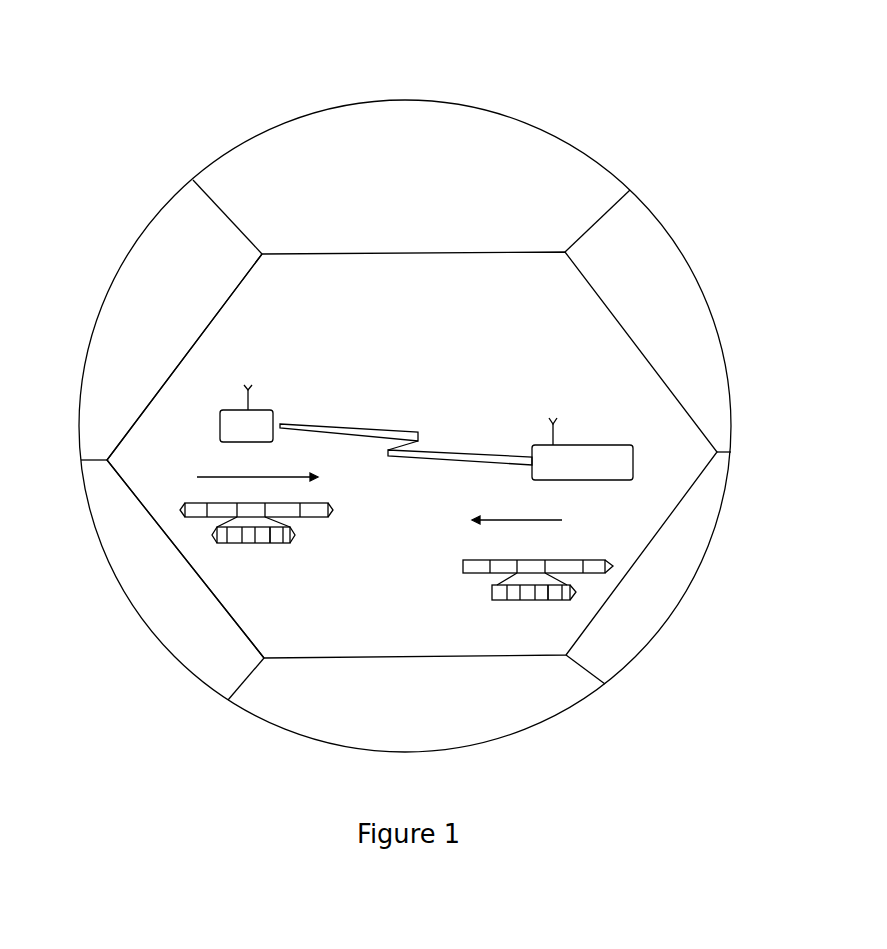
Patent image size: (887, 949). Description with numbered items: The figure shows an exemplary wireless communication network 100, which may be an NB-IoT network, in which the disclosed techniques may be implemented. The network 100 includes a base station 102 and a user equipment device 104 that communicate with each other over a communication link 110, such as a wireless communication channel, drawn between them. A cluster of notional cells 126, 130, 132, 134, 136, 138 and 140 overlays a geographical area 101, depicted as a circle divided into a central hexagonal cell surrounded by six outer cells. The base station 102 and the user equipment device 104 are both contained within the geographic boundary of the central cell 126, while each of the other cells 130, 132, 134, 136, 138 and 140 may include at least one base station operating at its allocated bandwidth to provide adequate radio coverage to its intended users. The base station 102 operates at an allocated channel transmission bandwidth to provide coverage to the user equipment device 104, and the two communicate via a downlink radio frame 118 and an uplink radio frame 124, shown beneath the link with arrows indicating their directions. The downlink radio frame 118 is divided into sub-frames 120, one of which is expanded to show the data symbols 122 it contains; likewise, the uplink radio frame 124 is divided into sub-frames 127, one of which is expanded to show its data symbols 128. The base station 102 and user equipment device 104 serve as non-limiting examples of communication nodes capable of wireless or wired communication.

The wireless communication network 100 is at (356, 68).
The geographical area 101 is at (530, 118).
The base station 102 is at (220, 422).
The user equipment device 104 is at (602, 445).
The communication link 110 is at (402, 428).
The downlink radio frame 118 is at (182, 510).
The sub-frame 120 is at (213, 535).
The data symbol 122 is at (268, 541).
The uplink radio frame 124 is at (585, 560).
The cell 126 is at (548, 601).
The sub-frame 127 is at (495, 594).
The data symbol 128 is at (293, 297).
The cell 130 is at (157, 227).
The cell 132 is at (270, 145).
The cell 134 is at (650, 242).
The cell 136 is at (627, 640).
The cell 138 is at (307, 707).
The cell 140 is at (160, 617).